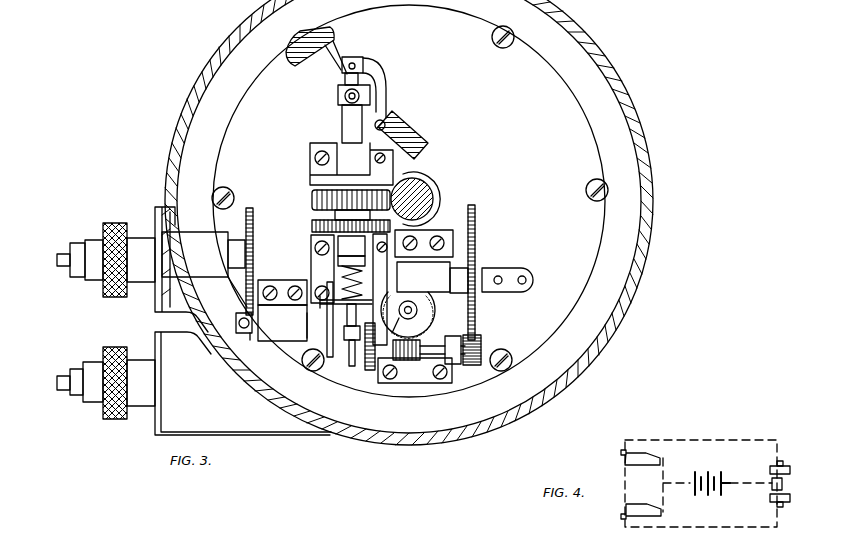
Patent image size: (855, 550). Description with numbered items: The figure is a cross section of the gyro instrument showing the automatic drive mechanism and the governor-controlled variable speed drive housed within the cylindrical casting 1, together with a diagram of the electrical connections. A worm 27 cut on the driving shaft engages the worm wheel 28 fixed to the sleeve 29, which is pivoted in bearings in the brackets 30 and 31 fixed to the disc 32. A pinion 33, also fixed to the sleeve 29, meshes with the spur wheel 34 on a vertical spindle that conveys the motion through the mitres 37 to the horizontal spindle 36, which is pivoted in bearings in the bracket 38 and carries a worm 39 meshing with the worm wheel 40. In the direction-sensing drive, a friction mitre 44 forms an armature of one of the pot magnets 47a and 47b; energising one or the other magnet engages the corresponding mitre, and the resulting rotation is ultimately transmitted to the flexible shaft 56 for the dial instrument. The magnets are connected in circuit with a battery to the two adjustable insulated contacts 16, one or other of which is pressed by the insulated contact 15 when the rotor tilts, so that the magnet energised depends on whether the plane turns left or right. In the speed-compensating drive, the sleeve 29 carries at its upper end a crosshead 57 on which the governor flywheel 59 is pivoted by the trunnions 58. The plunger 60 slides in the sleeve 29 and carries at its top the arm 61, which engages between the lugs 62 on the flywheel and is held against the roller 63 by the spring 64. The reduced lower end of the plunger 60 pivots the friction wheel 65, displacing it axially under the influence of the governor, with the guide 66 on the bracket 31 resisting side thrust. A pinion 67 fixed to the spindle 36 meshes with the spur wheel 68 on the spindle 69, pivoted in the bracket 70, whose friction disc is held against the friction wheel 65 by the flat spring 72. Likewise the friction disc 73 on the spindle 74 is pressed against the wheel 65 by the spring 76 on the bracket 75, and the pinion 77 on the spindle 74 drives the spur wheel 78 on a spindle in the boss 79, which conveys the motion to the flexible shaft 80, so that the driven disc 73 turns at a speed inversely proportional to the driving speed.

In FIG. 3, the cylindrical casting 1 is at (176, 137).
In FIG. 3, the disc 32 is at (242, 104).
In FIG. 3, the flexible shaft 80 is at (61, 255).
In FIG. 3, the boss 79 is at (193, 233).
In FIG. 3, the flexible shaft 56 is at (62, 379).
In FIG. 3, the governor flywheel 59 is at (333, 46).
In FIG. 3, the arm 61 is at (379, 70).
In FIG. 3, the plunger 60 is at (345, 80).
In FIG. 3, the crosshead 57 is at (338, 96).
In FIG. 3, the trunnions 58 is at (347, 100).
In FIG. 3, the sleeve 29 is at (342, 117).
In FIG. 3, the lugs 62 is at (408, 123).
In FIG. 3, the roller 63 is at (375, 126).
In FIG. 3, the bracket 30 is at (314, 164).
In FIG. 3, the worm wheel 28 is at (315, 195).
In FIG. 3, the pinion 33 is at (336, 214).
In FIG. 3, the spur wheel 34 is at (314, 226).
In FIG. 3, the worm 27 is at (433, 194).
In FIG. 3, the bracket 70 is at (431, 231).
In FIG. 3, the spindle 69 is at (457, 268).
In FIG. 3, the spur wheel 68 is at (476, 312).
In FIG. 3, the flat spring 72 is at (506, 270).
In FIG. 3, the worm wheel 40 is at (431, 305).
In FIG. 3, the friction mitre 44 is at (411, 314).
In FIG. 3, the worm 39 is at (410, 361).
In FIG. 3, the horizontal spindle 36 is at (445, 356).
In FIG. 3, the pinion 67 is at (481, 348).
In FIG. 3, the bracket 38 is at (453, 372).
In FIG. 3, the bracket 31 is at (311, 250).
In FIG. 3, the spring 64 is at (338, 259).
In FIG. 3, the friction wheel 65 is at (345, 312).
In FIG. 3, the bracket 75 is at (266, 281).
In FIG. 3, the spur wheel 78 is at (255, 240).
In FIG. 3, the spring 76 is at (240, 313).
In FIG. 3, the pinion 77 is at (249, 338).
In FIG. 3, the spindle 74 is at (322, 312).
In FIG. 3, the friction disc 73 is at (316, 340).
In FIG. 3, the guide 66 is at (348, 338).
In FIG. 3, the mitres 37 is at (371, 366).
In FIG. 4, the pot magnet 47a is at (660, 459).
In FIG. 4, the pot magnet 47b is at (662, 509).
In FIG. 4, the adjustable insulated contacts 16 is at (771, 469).
In FIG. 4, the insulated contact 15 is at (772, 486).